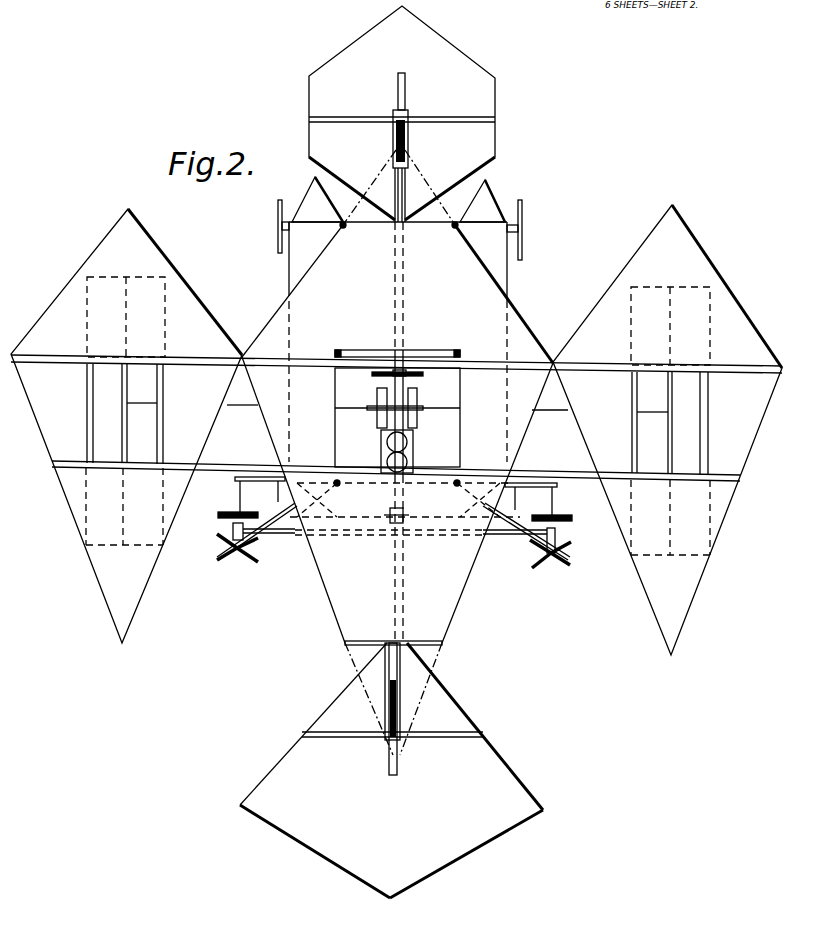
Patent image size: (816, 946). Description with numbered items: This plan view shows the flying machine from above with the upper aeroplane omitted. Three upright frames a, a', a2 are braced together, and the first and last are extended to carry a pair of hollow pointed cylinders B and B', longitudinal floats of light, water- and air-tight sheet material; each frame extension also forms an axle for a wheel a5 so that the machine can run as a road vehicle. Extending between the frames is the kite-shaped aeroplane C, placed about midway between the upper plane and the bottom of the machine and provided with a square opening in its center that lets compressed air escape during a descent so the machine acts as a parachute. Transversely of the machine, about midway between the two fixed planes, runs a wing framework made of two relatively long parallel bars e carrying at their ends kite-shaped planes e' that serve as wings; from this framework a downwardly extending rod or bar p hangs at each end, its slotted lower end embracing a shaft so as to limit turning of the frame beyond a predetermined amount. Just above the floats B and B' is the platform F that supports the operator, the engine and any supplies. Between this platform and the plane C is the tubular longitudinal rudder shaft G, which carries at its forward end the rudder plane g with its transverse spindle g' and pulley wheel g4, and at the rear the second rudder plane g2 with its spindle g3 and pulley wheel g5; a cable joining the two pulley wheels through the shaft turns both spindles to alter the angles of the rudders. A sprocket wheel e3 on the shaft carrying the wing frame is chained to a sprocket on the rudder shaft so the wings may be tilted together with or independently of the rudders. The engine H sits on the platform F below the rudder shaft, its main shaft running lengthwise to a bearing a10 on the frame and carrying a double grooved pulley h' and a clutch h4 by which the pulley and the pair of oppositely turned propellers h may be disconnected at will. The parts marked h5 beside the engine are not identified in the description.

The front rudder plane g is at (413, 113).
The transverse spindle g' is at (402, 129).
The pulley wheel g4 is at (405, 88).
The platform F is at (508, 269).
The aeroplane C is at (528, 322).
The hollow pointed cylinder B is at (313, 191).
The hollow pointed cylinder B' is at (491, 191).
The upright frame a is at (450, 243).
The wheel a5 is at (278, 244).
The kite-shaped wing plane e' is at (396, 430).
The downwardly extending rod p is at (143, 403).
The parallel bar e is at (396, 418).
The upright frame a' is at (397, 338).
The bearing a10 is at (380, 376).
The sprocket wheel e3 is at (412, 375).
The cylinders h5 is at (377, 418).
The rudder shaft G is at (381, 445).
The engine H is at (413, 445).
The upright frame a2 is at (457, 486).
The clutch h4 is at (397, 508).
The double grooved pulley h' is at (395, 542).
The propeller h is at (394, 546).
The rear rudder plane g2 is at (494, 757).
The transverse spindle g3 is at (446, 738).
The pulley wheel g5 is at (398, 757).